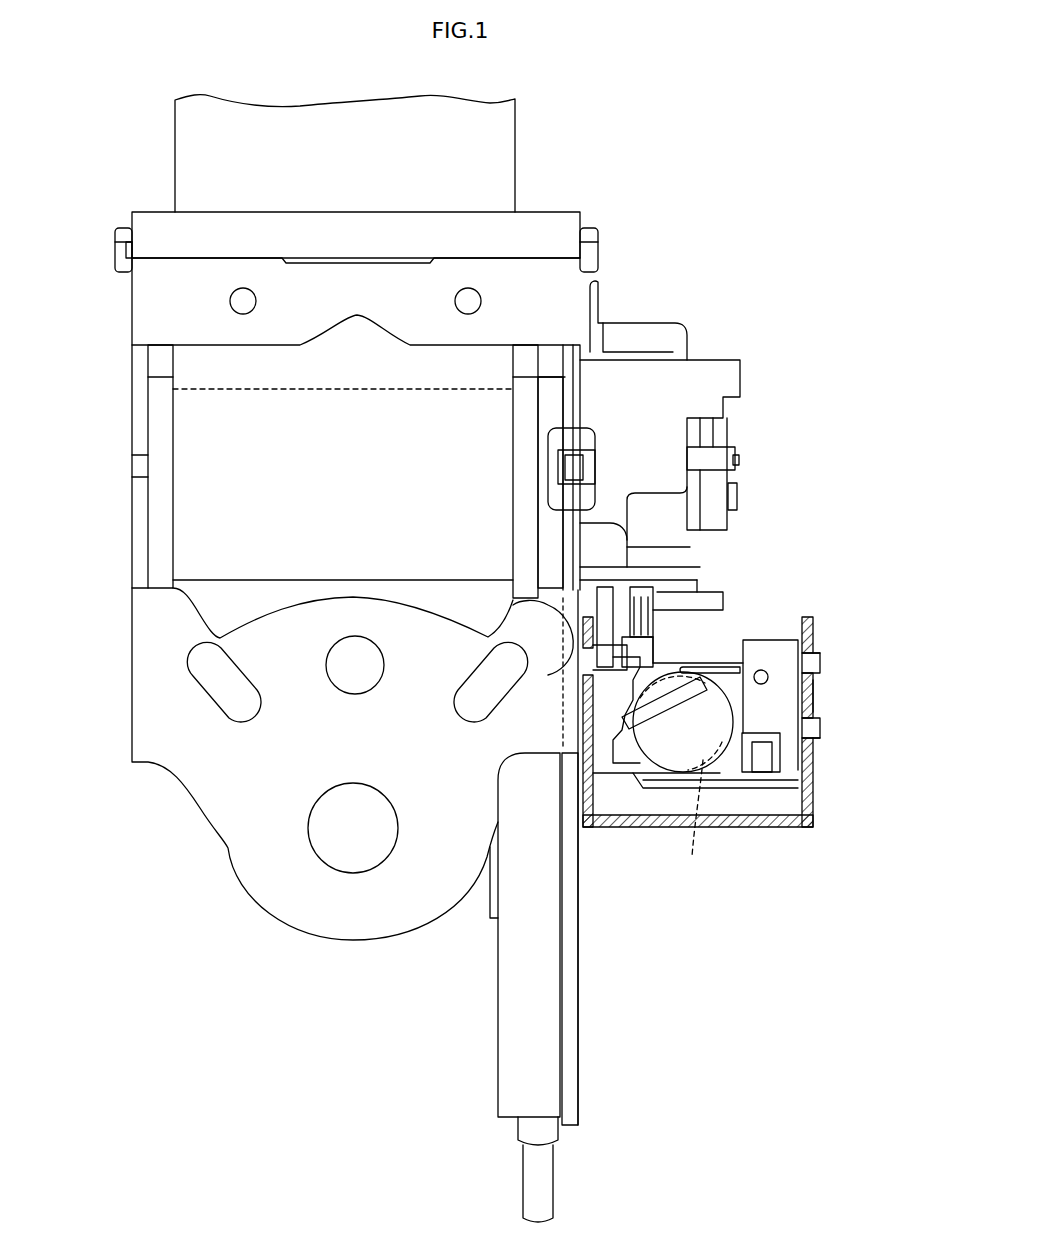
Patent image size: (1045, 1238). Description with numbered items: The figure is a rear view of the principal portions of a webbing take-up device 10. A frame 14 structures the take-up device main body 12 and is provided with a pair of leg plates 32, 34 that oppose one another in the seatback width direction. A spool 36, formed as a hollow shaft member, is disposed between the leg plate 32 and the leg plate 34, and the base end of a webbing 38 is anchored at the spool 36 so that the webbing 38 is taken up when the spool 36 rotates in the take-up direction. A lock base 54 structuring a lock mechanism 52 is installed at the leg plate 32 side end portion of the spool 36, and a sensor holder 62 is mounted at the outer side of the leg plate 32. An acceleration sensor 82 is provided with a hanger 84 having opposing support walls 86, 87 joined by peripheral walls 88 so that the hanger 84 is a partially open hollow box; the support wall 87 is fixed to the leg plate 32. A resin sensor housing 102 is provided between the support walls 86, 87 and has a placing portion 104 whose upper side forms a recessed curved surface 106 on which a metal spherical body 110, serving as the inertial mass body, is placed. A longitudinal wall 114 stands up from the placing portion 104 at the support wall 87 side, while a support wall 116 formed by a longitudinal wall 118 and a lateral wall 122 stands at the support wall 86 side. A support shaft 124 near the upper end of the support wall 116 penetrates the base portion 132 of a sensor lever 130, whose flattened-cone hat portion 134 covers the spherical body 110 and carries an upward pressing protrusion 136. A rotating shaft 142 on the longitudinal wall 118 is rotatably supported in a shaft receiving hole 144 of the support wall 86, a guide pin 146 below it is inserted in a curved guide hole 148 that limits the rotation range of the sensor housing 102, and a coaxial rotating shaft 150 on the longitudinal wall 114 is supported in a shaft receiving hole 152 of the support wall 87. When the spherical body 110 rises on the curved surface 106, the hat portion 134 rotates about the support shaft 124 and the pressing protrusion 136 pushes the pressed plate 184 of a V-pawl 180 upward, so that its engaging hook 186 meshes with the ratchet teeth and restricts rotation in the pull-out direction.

The webbing take-up device 10 is at (120, 196).
The take-up device main body 12 is at (126, 798).
The frame 14 is at (232, 880).
The leg plate 32 is at (581, 400).
The leg plate 34 is at (132, 380).
The spool 36 is at (162, 560).
The webbing 38 is at (497, 143).
The lock mechanism 52 is at (642, 277).
The lock base 54 is at (550, 405).
The sensor holder 62 is at (686, 327).
The acceleration sensor 82 is at (832, 570).
The hanger 84 is at (600, 832).
The support wall 86 is at (813, 802).
The support wall 87 is at (577, 760).
The peripheral walls 88 is at (625, 832).
The sensor housing 102 is at (760, 792).
The placing portion 104 is at (733, 780).
The curved surface 106 is at (681, 780).
The spherical body 110 is at (667, 762).
The longitudinal wall 114 is at (600, 686).
The support wall 116 is at (808, 620).
The longitudinal wall 118 is at (814, 694).
The lateral wall 122 is at (790, 757).
The support shaft 124 is at (790, 640).
The sensor lever 130 is at (708, 656).
The base portion 132 is at (761, 685).
The hat portion 134 is at (658, 710).
The pressing protrusion 136 is at (605, 723).
The rotating shaft 142 is at (821, 664).
The shaft receiving hole 144 is at (819, 655).
The guide pin 146 is at (821, 727).
The guide hole 148 is at (819, 736).
The rotating shaft 150 is at (510, 607).
The shaft receiving hole 152 is at (587, 660).
The V-pawl 180 is at (670, 636).
The pressed plate 184 is at (650, 648).
The engaging hook 186 is at (645, 612).